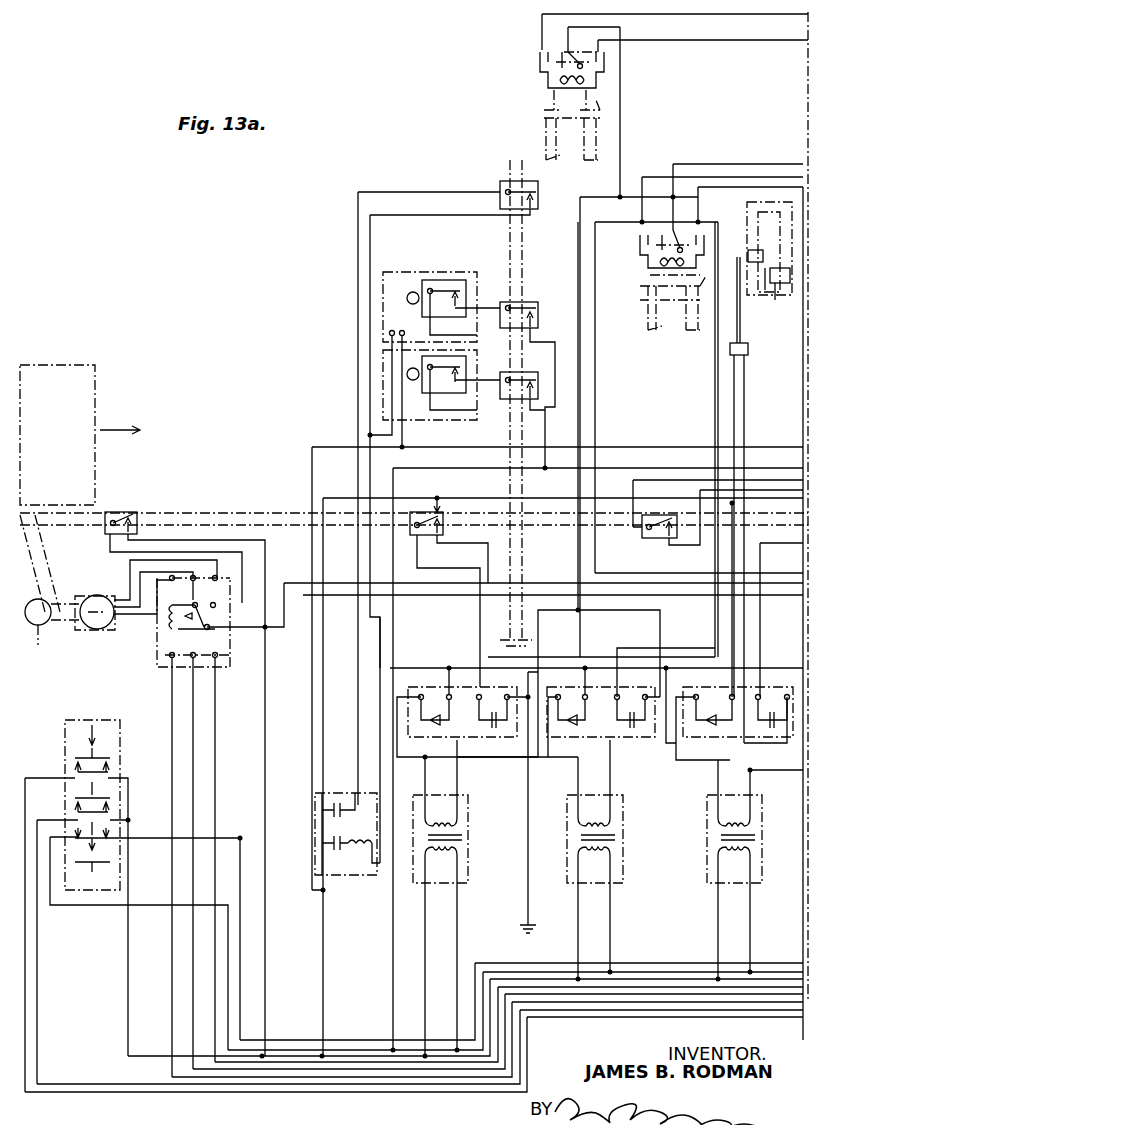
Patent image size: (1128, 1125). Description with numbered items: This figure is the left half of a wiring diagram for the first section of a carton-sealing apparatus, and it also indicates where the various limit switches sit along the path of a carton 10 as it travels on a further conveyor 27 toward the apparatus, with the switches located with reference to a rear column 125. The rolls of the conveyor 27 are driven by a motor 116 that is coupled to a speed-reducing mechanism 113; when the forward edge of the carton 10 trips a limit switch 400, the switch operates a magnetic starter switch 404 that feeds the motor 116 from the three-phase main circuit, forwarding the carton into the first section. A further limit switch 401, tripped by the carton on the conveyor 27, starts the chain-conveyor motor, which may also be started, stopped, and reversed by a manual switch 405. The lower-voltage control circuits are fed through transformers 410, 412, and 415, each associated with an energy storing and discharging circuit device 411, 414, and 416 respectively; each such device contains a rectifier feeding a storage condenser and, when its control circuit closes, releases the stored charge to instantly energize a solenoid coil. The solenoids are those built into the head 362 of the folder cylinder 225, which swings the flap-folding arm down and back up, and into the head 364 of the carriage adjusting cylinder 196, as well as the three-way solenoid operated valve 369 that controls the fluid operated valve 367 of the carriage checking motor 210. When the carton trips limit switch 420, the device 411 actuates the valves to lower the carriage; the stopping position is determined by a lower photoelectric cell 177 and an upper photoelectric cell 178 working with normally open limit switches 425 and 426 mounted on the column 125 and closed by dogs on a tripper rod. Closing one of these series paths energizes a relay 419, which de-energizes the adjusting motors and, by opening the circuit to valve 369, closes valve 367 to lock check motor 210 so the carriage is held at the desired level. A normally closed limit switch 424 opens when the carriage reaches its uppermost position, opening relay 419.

The carton 10 is at (93, 475).
The further conveyor 27 is at (80, 525).
The speed-reducing mechanism 113 is at (51, 633).
The motor 116 is at (92, 596).
The rear column 125 is at (508, 236).
The lower photoelectric cell and relay 177 is at (418, 425).
The upper photoelectric cell and relay 178 is at (404, 272).
The carriage adjusting cylinder 196 is at (646, 318).
The carriage checking motor 210 is at (768, 298).
The folder cylinder 225 is at (544, 128).
The head of folder cylinder 362 is at (542, 78).
The head of carriage adjusting cylinder 364 is at (646, 268).
The fluid operated valve 367 is at (748, 252).
The three-way solenoid operated valve 369 is at (748, 352).
The limit switch 400 is at (128, 510).
The limit switch 401 is at (658, 540).
The magnetic starter switch 404 is at (160, 655).
The manual switch 405 is at (112, 745).
The transformer 410 is at (462, 882).
The energy storing and discharging circuit device 411 is at (485, 740).
The transformer 412 is at (614, 882).
The energy storing and discharging circuit device 414 is at (560, 742).
The transformer 415 is at (758, 882).
The energy storing and discharging circuit device 416 is at (698, 742).
The relay 419 is at (342, 880).
The limit switch 420 is at (426, 508).
The normally closed limit switch 424 is at (536, 182).
The limit switch 425 is at (528, 305).
The limit switch 426 is at (540, 384).